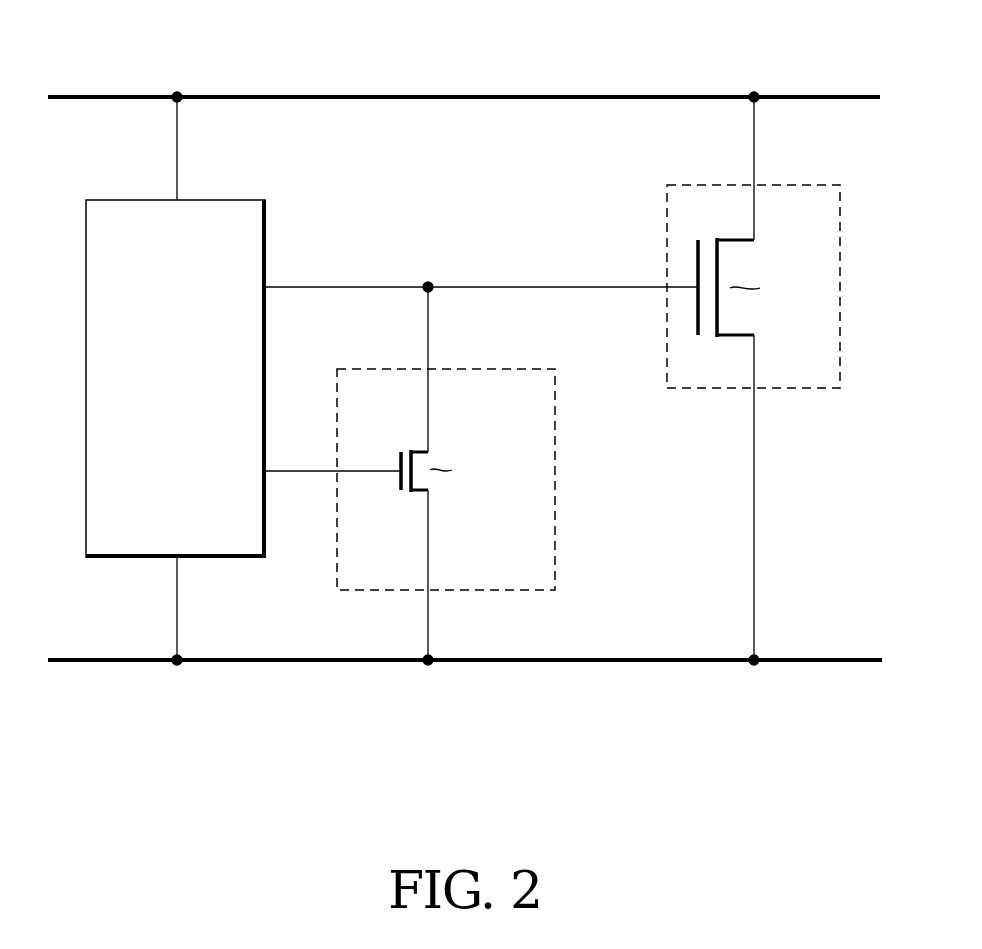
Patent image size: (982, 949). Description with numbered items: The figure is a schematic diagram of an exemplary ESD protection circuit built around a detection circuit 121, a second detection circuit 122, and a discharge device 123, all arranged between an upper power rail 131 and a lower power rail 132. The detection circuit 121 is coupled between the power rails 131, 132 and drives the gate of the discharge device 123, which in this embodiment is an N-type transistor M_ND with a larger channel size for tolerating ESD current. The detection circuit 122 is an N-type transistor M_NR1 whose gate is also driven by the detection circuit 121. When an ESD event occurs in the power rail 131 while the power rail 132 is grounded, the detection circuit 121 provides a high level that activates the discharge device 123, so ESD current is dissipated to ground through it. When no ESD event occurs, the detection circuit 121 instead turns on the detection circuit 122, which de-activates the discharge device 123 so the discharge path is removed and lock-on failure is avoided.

The detection circuit 121 is at (220, 559).
The detection circuit 122 is at (556, 562).
The discharge device 123 is at (812, 392).
The power rail 131 is at (815, 93).
The power rail 132 is at (816, 664).